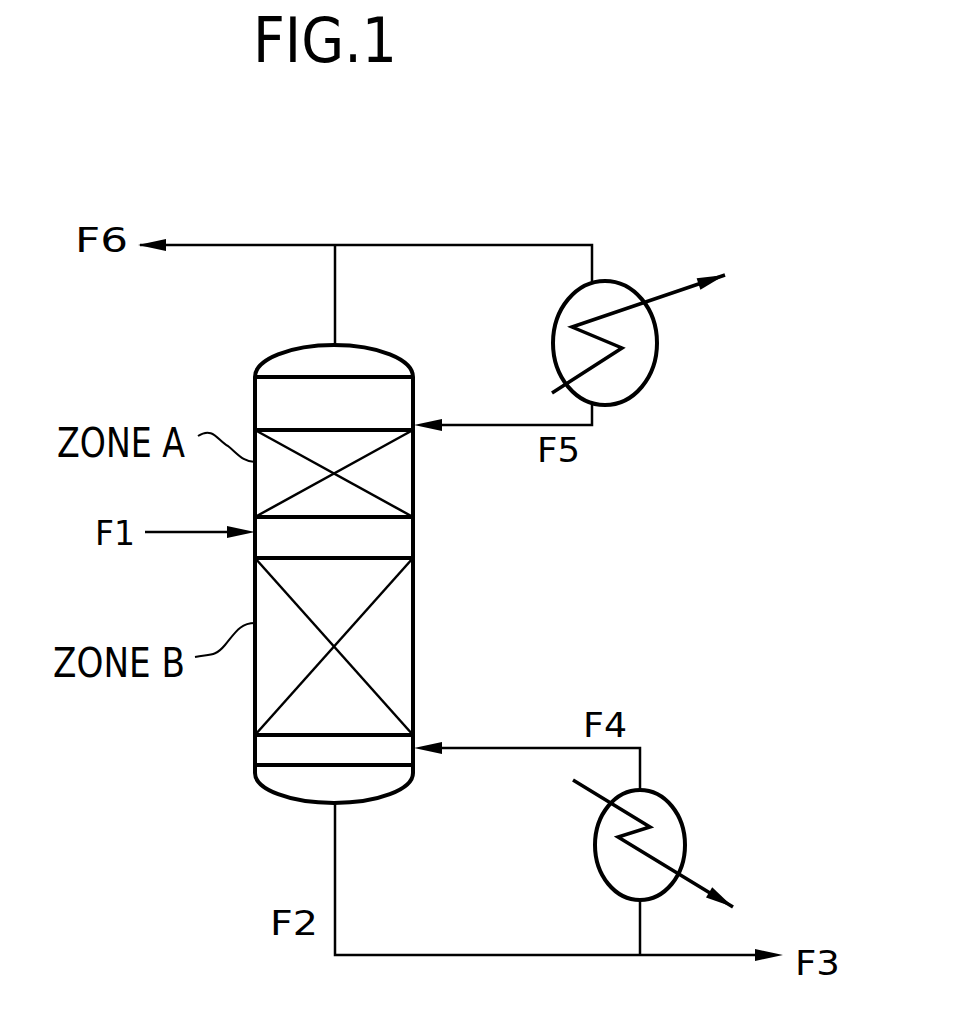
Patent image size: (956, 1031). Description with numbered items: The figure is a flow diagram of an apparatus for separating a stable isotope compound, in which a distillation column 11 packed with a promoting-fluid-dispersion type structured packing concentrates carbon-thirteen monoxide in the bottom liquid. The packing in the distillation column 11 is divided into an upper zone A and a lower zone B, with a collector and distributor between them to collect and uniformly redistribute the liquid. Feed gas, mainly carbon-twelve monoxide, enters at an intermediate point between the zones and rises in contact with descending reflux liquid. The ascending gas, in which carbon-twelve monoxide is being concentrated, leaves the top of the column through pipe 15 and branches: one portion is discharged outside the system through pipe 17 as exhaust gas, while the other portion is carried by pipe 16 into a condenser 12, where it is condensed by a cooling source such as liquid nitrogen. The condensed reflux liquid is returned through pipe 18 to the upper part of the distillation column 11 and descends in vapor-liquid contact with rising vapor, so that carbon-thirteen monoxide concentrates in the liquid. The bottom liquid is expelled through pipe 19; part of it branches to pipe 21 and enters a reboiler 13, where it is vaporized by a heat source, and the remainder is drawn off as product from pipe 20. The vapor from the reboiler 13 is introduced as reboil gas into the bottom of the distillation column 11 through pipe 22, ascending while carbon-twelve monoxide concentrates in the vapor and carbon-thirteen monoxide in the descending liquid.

The distillation column 11 is at (415, 535).
The condenser 12 is at (657, 370).
The reboiler 13 is at (686, 843).
The pipe 15 is at (335, 285).
The pipe 16 is at (488, 246).
The pipe 17 is at (240, 246).
The pipe 18 is at (473, 424).
The pipe 19 is at (336, 848).
The pipe 20 is at (710, 957).
The pipe 21 is at (640, 925).
The pipe 22 is at (506, 750).